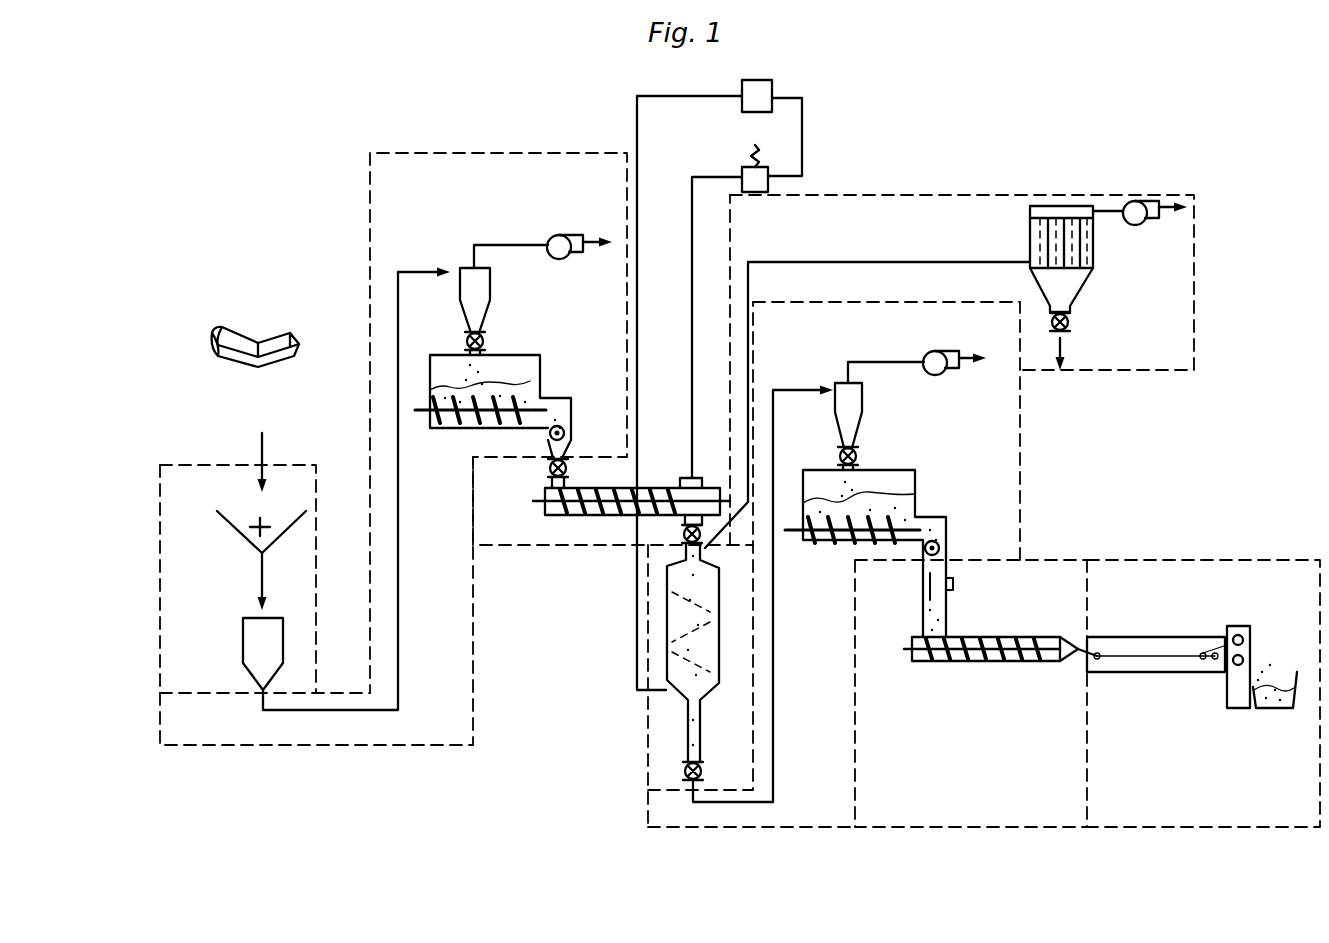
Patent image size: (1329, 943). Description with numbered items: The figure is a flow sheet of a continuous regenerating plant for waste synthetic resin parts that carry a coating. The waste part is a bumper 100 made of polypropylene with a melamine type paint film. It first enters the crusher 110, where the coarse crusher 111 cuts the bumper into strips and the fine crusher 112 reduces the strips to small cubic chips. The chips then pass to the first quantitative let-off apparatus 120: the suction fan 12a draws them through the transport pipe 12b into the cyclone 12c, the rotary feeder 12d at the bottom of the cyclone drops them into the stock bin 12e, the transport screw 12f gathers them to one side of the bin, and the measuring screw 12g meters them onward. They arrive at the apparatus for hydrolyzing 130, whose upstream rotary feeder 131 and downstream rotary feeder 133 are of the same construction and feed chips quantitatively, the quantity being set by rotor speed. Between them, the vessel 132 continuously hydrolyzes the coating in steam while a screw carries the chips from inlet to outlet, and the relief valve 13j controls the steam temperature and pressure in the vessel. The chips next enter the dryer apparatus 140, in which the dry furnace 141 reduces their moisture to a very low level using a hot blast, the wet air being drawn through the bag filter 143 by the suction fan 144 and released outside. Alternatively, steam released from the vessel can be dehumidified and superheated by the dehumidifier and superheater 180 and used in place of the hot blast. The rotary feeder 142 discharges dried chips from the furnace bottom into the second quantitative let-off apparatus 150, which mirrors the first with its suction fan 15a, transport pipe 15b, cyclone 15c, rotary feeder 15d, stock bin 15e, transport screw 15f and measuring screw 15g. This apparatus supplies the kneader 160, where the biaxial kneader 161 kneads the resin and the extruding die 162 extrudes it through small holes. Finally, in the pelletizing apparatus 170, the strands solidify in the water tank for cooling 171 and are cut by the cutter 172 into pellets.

The bumper 100 is at (252, 342).
The crusher 110 is at (162, 466).
The coarse crusher 111 is at (236, 533).
The fine crusher 112 is at (243, 630).
The first quantitative let-off apparatus 120 is at (330, 745).
The suction fan 12a is at (552, 233).
The transport pipe 12b is at (398, 668).
The cyclone 12c is at (490, 292).
The rotary feeder 12d is at (485, 343).
The stock bin 12e is at (540, 372).
The transport screw 12f is at (450, 430).
The measuring screw 12g is at (550, 436).
The apparatus for hydrolyzing 130 is at (598, 548).
The upstream rotary feeder 131 is at (549, 470).
The vessel 132 is at (560, 516).
The downstream rotary feeder 133 is at (702, 528).
The relief valve 13j is at (768, 186).
The dryer apparatus 140 is at (648, 705).
The dry furnace 141 is at (667, 635).
The rotary feeder 142 is at (683, 771).
The bag filter 143 is at (1095, 262).
The suction fan 144 is at (1145, 198).
The second quantitative let-off apparatus 150 is at (750, 828).
The suction fan 15a is at (930, 348).
The transport pipe 15b is at (773, 728).
The cyclone 15c is at (862, 406).
The rotary feeder 15d is at (858, 459).
The stock bin 15e is at (905, 495).
The transport screw 15f is at (818, 543).
The measuring screw 15g is at (940, 548).
The kneader 160 is at (985, 828).
The biaxial kneader 161 is at (965, 663).
The extruding die 162 is at (1068, 656).
The pelletizing apparatus 170 is at (1200, 828).
The water tank for cooling 171 is at (1157, 672).
The cutter 172 is at (1237, 708).
The dehumidifier and superheater 180 is at (773, 86).